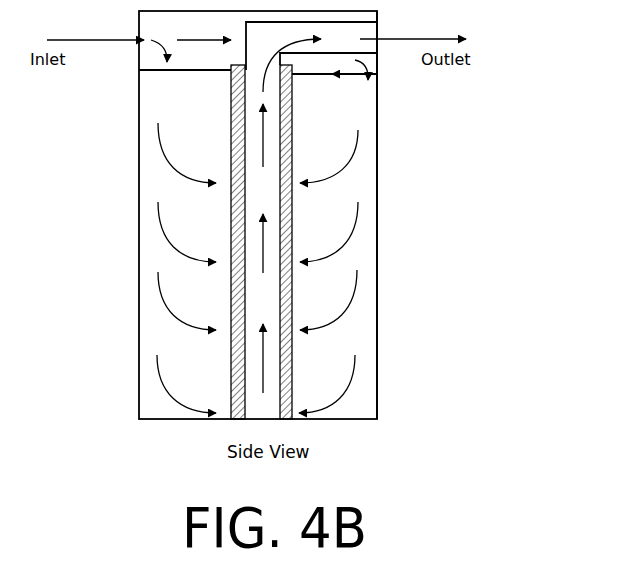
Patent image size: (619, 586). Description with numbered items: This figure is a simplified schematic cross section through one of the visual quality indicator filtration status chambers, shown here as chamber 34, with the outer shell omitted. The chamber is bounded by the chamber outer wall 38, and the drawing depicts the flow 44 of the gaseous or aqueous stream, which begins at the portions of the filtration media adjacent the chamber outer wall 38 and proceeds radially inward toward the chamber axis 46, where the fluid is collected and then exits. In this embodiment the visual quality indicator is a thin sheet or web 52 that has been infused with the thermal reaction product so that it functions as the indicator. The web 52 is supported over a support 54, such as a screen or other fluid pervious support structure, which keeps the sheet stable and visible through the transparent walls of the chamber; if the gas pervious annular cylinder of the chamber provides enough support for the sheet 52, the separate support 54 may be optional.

The VQI filtration status chamber 34 is at (136, 215).
The chamber outer wall 38 is at (377, 188).
The flow 44 is at (162, 53).
The chamber axis 46 is at (260, 307).
The web 52 is at (292, 133).
The support 54 is at (287, 172).